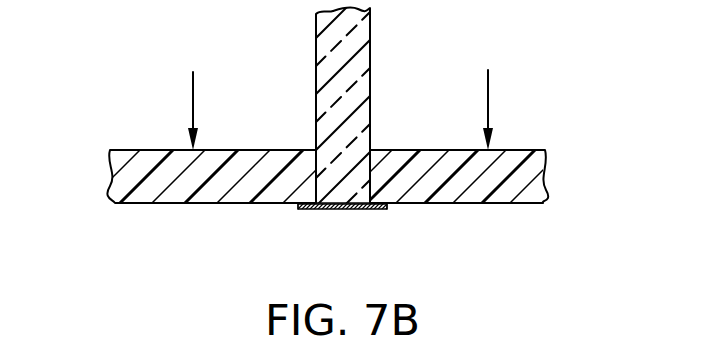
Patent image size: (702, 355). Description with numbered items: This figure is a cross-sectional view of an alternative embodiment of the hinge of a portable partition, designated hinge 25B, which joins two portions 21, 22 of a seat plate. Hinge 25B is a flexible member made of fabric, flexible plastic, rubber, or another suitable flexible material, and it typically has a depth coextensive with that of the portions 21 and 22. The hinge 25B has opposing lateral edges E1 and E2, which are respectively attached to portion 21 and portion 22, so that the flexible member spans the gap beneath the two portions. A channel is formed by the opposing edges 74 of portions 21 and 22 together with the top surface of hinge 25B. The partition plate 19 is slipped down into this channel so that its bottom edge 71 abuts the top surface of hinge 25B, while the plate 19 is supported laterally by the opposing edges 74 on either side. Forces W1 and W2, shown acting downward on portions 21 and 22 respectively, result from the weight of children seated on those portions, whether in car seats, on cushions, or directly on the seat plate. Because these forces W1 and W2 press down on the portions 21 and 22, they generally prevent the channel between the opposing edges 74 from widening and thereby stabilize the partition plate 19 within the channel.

The partition plate 19 is at (371, 97).
The portion of seat plate 21 is at (137, 151).
The portion of seat plate 22 is at (517, 149).
The opposing edges 74 is at (317, 166).
The bottom edge 71 is at (348, 212).
The hinge 25B is at (394, 212).
The lateral edge E1 is at (300, 212).
The lateral edge E2 is at (380, 212).
The force W1 is at (191, 96).
The force W2 is at (484, 96).